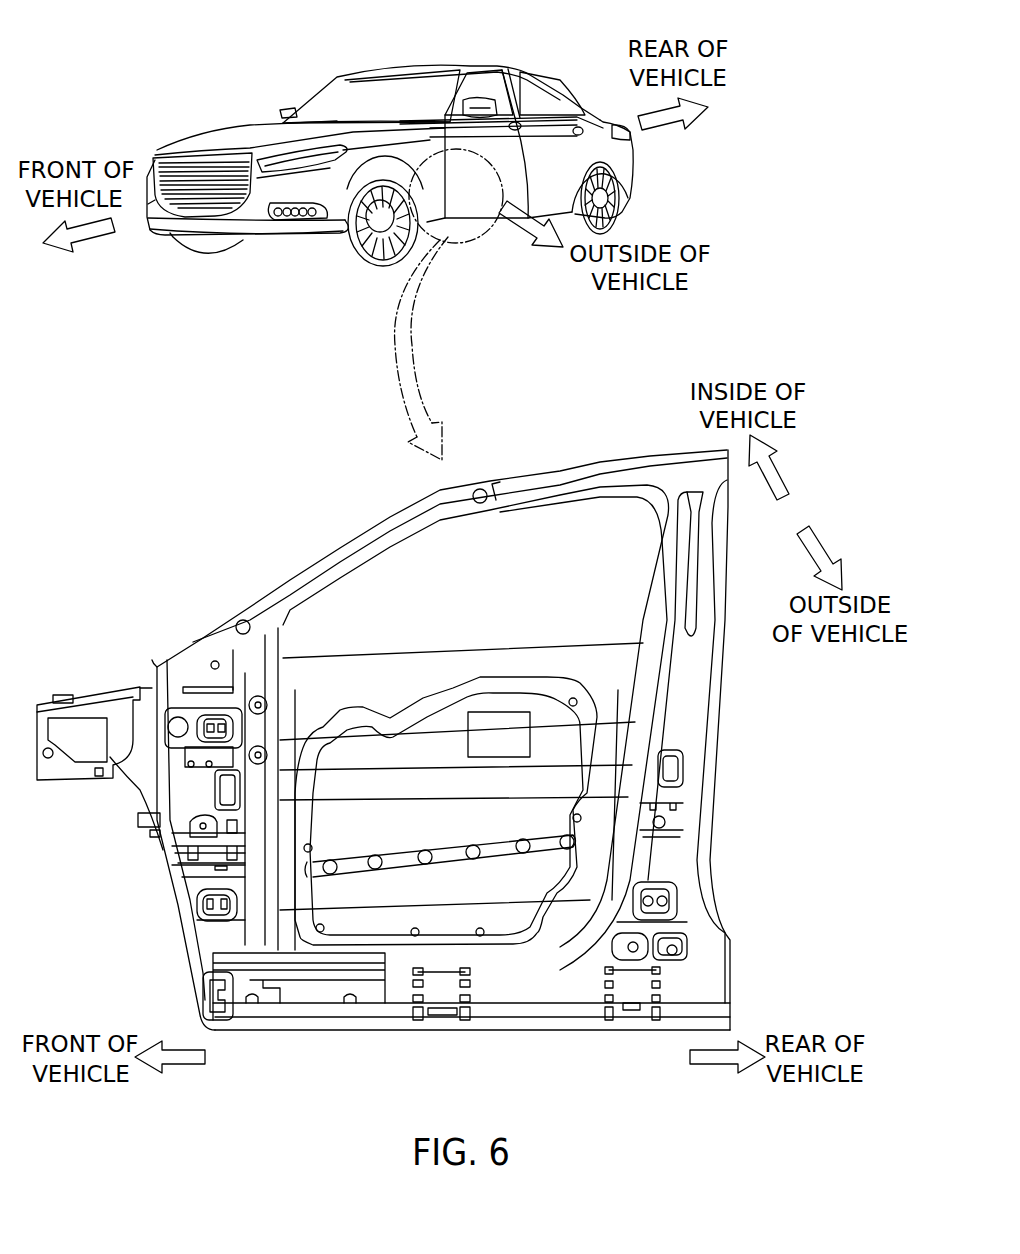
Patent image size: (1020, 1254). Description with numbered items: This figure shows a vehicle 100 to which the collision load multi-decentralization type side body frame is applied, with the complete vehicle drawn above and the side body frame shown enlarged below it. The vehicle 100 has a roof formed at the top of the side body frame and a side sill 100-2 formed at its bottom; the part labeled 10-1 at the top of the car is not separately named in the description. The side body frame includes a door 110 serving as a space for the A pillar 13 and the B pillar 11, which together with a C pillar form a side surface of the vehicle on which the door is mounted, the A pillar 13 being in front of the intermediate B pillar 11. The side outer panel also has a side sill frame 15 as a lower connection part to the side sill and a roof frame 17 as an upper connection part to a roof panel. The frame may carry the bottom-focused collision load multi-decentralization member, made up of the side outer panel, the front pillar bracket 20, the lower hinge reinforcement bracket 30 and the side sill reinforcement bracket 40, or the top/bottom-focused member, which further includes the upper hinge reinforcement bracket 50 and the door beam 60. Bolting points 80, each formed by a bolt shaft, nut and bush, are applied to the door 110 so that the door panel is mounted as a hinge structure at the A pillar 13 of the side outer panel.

The vehicle 100 is at (250, 135).
The vehicle body side structure 10-1 is at (446, 70).
The door 110 is at (517, 143).
The side sill 100-2 is at (496, 220).
The B pillar 11 is at (700, 667).
The A pillar 13 is at (258, 727).
The side sill frame 15 is at (390, 1005).
The roof frame 17 is at (505, 478).
The front pillar bracket 20 is at (140, 790).
The lower hinge reinforcement bracket 30 is at (180, 887).
The side sill reinforcement bracket 40 is at (275, 972).
The upper hinge reinforcement bracket 50 is at (186, 712).
The door beam 60 is at (545, 832).
The bolting point 80 is at (214, 716).